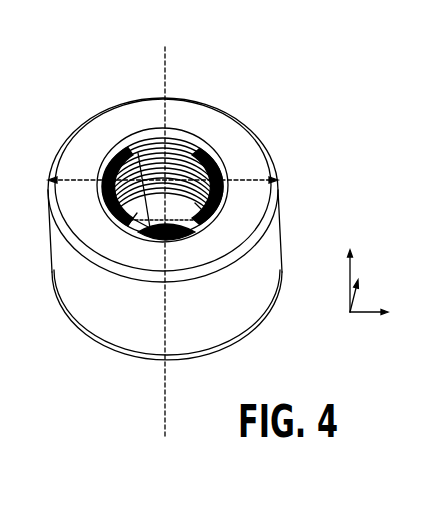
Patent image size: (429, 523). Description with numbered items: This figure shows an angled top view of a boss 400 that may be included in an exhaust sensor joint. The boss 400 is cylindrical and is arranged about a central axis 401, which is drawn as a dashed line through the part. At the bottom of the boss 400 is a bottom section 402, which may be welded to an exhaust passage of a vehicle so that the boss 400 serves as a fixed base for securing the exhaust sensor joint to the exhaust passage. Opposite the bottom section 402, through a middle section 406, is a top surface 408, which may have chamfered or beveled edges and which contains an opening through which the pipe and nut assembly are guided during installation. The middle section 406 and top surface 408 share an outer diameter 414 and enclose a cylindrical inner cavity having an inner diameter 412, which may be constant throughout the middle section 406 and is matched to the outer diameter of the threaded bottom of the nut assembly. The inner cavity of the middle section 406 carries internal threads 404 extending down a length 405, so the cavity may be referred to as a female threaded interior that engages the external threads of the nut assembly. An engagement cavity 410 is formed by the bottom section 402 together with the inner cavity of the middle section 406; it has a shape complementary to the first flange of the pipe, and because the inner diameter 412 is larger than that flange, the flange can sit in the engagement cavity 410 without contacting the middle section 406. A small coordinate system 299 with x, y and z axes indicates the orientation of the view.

The boss 400 is at (222, 33).
The central axis 401 is at (165, 388).
The bottom section 402 is at (110, 352).
The internal threads 404 is at (192, 160).
The length 405 is at (126, 156).
The middle section 406 is at (284, 240).
The top surface 408 is at (93, 135).
The engagement cavity 410 is at (96, 179).
The inner diameter 412 is at (197, 202).
The outer diameter 414 is at (268, 180).
The coordinate system 299 is at (357, 226).